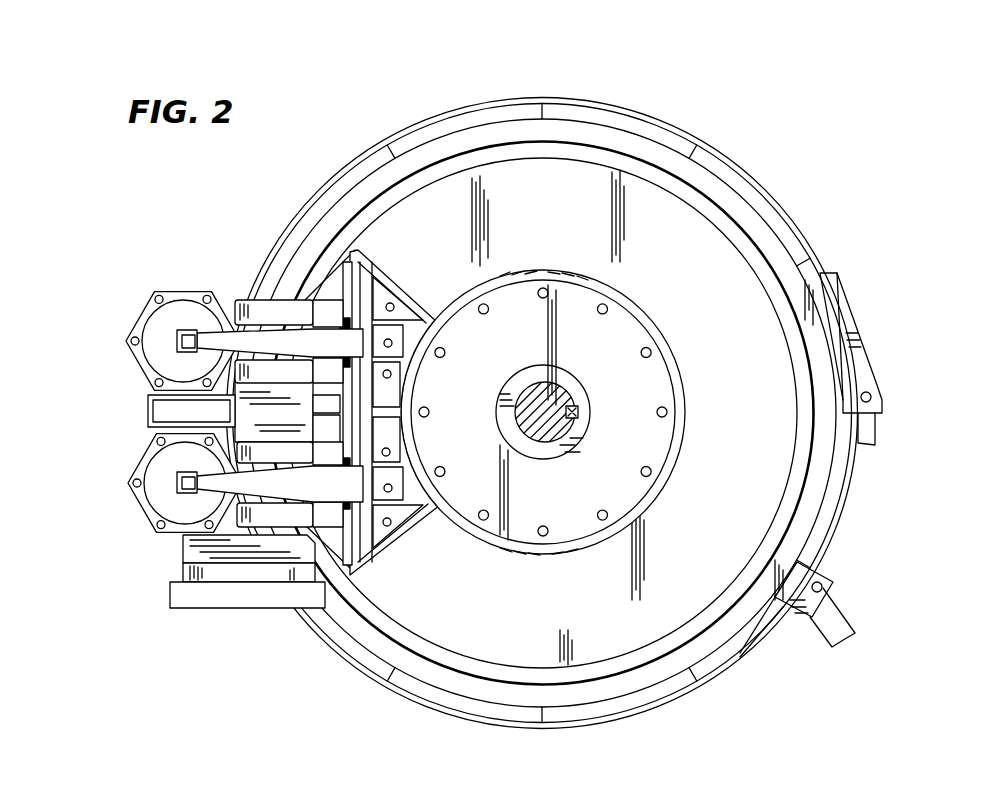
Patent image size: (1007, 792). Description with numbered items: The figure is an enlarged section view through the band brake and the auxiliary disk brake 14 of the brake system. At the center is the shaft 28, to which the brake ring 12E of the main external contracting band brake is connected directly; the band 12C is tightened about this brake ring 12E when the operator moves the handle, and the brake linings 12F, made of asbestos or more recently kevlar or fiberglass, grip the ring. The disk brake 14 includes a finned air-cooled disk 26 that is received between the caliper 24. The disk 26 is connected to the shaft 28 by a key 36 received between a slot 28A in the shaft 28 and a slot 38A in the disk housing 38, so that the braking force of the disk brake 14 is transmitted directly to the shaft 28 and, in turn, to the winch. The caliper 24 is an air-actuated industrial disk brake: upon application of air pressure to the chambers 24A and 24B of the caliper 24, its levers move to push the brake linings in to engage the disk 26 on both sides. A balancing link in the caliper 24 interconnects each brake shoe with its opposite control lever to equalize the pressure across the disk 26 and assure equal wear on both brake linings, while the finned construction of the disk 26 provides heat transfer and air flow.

The auxiliary disk brake 14 is at (555, 395).
The band 12C is at (607, 86).
The brake linings 12F is at (430, 133).
The brake ring 12E is at (820, 515).
The disk 26 is at (465, 642).
The shaft 28 is at (517, 418).
The slot 28A is at (578, 407).
The key 36 is at (582, 445).
The disk housing 38 is at (587, 416).
The slot 38A is at (575, 407).
The caliper 24 is at (300, 312).
The chamber 24A is at (165, 352).
The chamber 24B is at (158, 498).